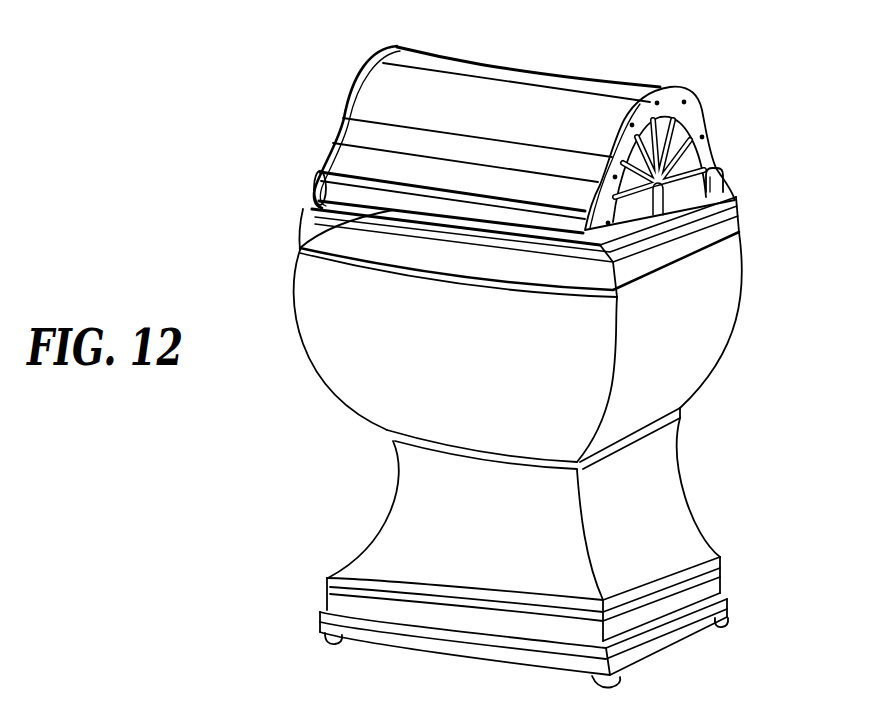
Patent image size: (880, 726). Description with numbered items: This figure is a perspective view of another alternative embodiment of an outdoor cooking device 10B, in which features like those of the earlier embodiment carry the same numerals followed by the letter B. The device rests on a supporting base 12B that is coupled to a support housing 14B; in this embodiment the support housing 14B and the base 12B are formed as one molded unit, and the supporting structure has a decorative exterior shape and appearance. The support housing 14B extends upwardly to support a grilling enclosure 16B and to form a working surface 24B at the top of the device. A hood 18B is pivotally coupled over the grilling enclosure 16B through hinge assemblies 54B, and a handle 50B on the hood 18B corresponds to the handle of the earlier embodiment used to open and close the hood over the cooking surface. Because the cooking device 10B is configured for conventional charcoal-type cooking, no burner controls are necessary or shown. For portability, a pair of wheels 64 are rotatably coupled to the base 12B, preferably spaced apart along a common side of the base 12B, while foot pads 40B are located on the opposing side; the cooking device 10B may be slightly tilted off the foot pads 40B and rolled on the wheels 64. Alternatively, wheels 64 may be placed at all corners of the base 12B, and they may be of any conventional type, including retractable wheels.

The outdoor cooking device 10B is at (730, 94).
The supporting base 12B is at (327, 598).
The support housing 14B is at (670, 444).
The grilling enclosure 16B is at (314, 207).
The hood 18B is at (558, 64).
The working surface 24B is at (302, 252).
The foot pads 40B is at (722, 622).
The handle 50B is at (333, 150).
The hinge assemblies 54B is at (728, 190).
The wheels 64 is at (334, 642).